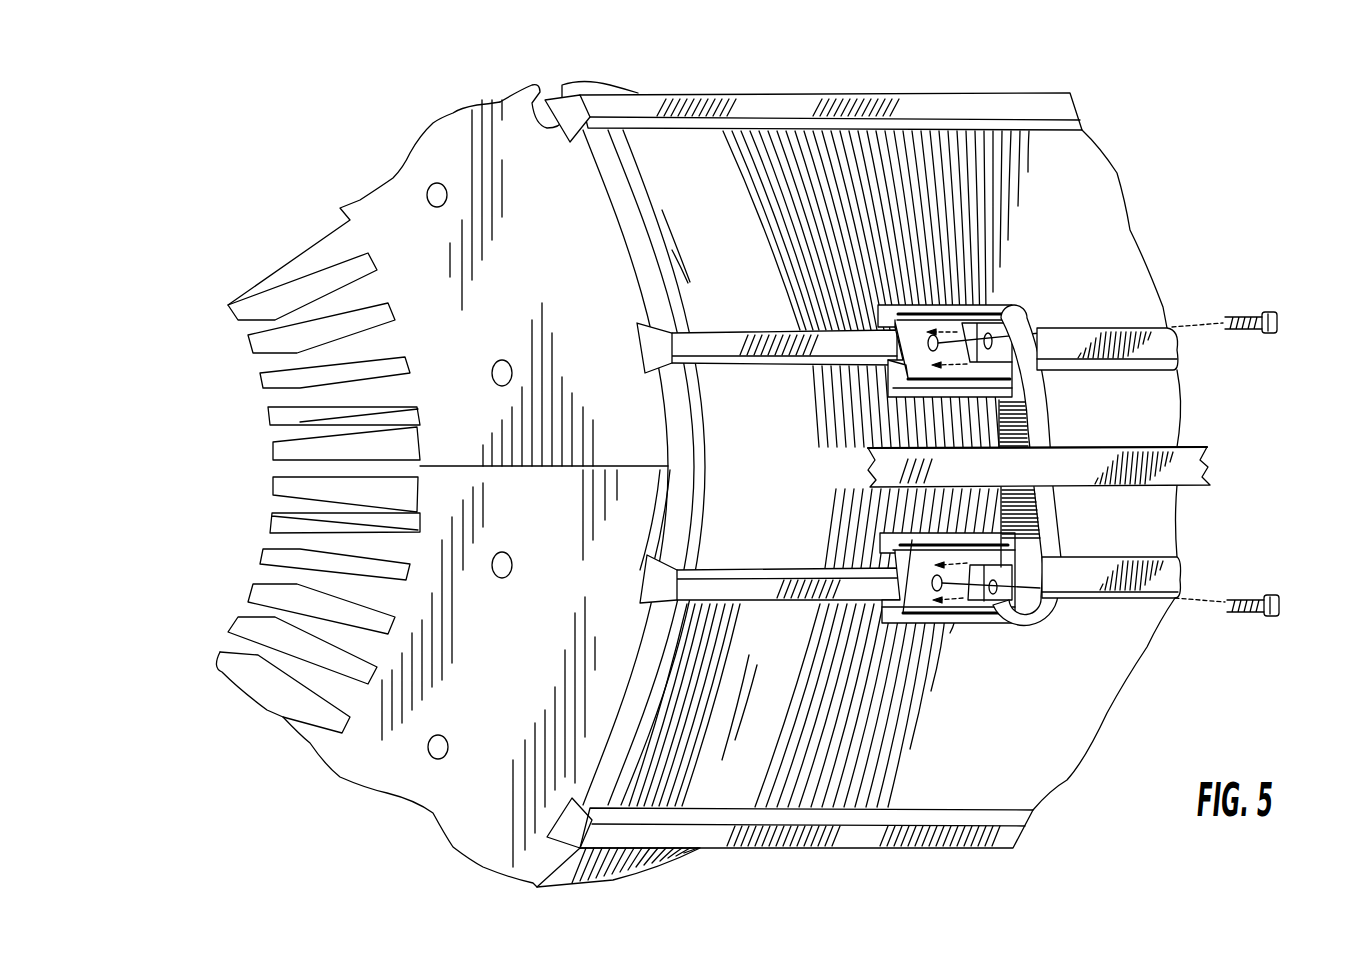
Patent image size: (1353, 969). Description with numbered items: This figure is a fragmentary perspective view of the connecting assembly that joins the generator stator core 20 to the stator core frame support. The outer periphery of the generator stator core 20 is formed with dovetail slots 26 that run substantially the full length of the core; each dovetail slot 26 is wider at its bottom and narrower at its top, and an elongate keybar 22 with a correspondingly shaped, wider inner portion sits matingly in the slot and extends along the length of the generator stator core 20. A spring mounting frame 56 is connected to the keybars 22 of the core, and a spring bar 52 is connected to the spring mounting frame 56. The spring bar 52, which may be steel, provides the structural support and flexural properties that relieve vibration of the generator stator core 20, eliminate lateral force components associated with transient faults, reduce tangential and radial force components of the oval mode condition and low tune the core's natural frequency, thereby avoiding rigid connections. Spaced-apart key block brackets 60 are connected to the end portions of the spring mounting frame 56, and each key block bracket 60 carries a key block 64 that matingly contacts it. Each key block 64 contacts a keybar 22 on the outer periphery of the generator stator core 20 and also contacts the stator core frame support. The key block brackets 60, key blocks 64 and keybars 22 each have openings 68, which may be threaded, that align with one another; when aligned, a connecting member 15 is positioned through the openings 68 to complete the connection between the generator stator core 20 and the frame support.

The connecting member 15 is at (1277, 617).
The generator stator core 20 is at (1137, 247).
The keybar 22 is at (1177, 362).
The dovetail slot 26 is at (536, 98).
The spring bar 52 is at (1208, 447).
The spring mounting frame 56 is at (1050, 530).
The key block bracket 60 is at (1037, 597).
The key block 64 is at (967, 622).
The opening 68 is at (991, 334).